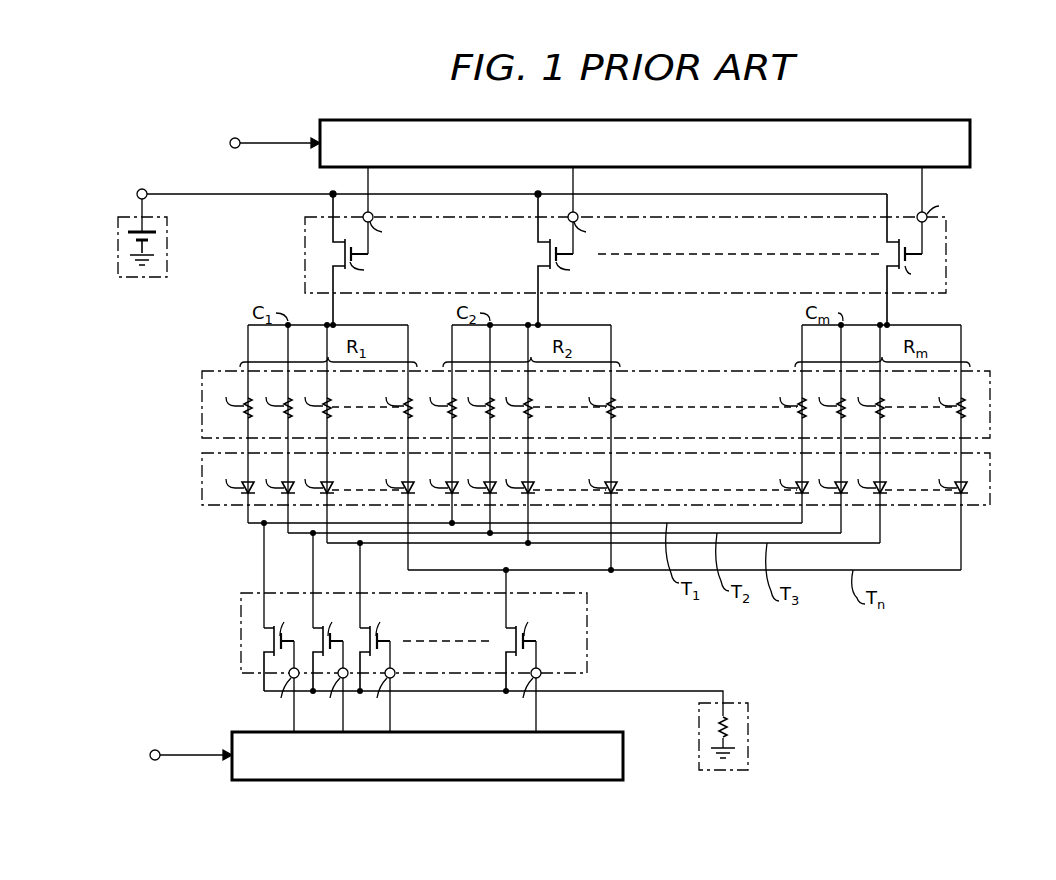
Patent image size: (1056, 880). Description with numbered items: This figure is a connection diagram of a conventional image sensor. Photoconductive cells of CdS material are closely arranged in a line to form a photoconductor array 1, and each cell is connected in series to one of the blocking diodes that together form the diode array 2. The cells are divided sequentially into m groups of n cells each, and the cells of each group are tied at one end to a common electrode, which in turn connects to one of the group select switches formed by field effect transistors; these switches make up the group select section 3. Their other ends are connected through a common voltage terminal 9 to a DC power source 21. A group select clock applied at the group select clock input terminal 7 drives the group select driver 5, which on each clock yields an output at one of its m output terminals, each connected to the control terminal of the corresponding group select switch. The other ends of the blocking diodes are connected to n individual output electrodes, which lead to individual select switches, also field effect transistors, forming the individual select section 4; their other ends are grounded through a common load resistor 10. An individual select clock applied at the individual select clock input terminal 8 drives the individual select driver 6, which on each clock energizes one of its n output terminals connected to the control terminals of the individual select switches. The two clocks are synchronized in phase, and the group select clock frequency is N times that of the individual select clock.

The photoconductor array 1 is at (991, 393).
The blocking diode array 2 is at (991, 476).
The group select section 3 is at (947, 238).
The individual select section 4 is at (588, 613).
The group select driver 5 is at (972, 130).
The individual select driver 6 is at (625, 748).
The group select clock input terminal 7 is at (235, 138).
The individual select clock input terminal 8 is at (155, 750).
The common voltage terminal 9 is at (142, 189).
The load resistor 10 is at (749, 722).
The DC power source 21 is at (168, 236).